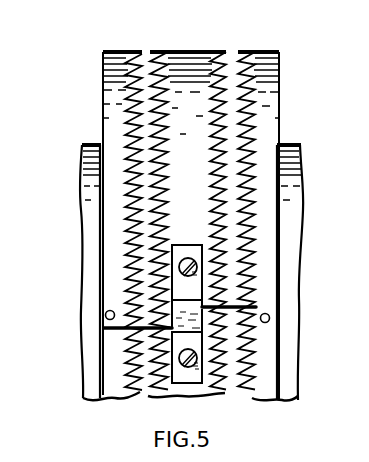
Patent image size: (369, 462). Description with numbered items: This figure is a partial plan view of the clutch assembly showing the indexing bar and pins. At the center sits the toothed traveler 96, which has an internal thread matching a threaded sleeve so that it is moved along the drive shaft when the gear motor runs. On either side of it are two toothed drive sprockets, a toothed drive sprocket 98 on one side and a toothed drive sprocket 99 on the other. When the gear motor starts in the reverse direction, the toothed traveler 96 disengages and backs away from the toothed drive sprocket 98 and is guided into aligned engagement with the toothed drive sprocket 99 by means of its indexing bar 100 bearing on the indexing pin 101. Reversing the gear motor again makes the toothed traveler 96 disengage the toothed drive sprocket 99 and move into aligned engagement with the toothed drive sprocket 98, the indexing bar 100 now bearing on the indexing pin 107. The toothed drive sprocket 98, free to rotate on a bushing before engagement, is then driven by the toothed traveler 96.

The toothed traveler 96 is at (183, 63).
The toothed drive sprocket 98 is at (119, 60).
The toothed drive sprocket 99 is at (257, 52).
The indexing bar 100 is at (258, 307).
The indexing pin 101 is at (270, 319).
The indexing pin 107 is at (105, 315).